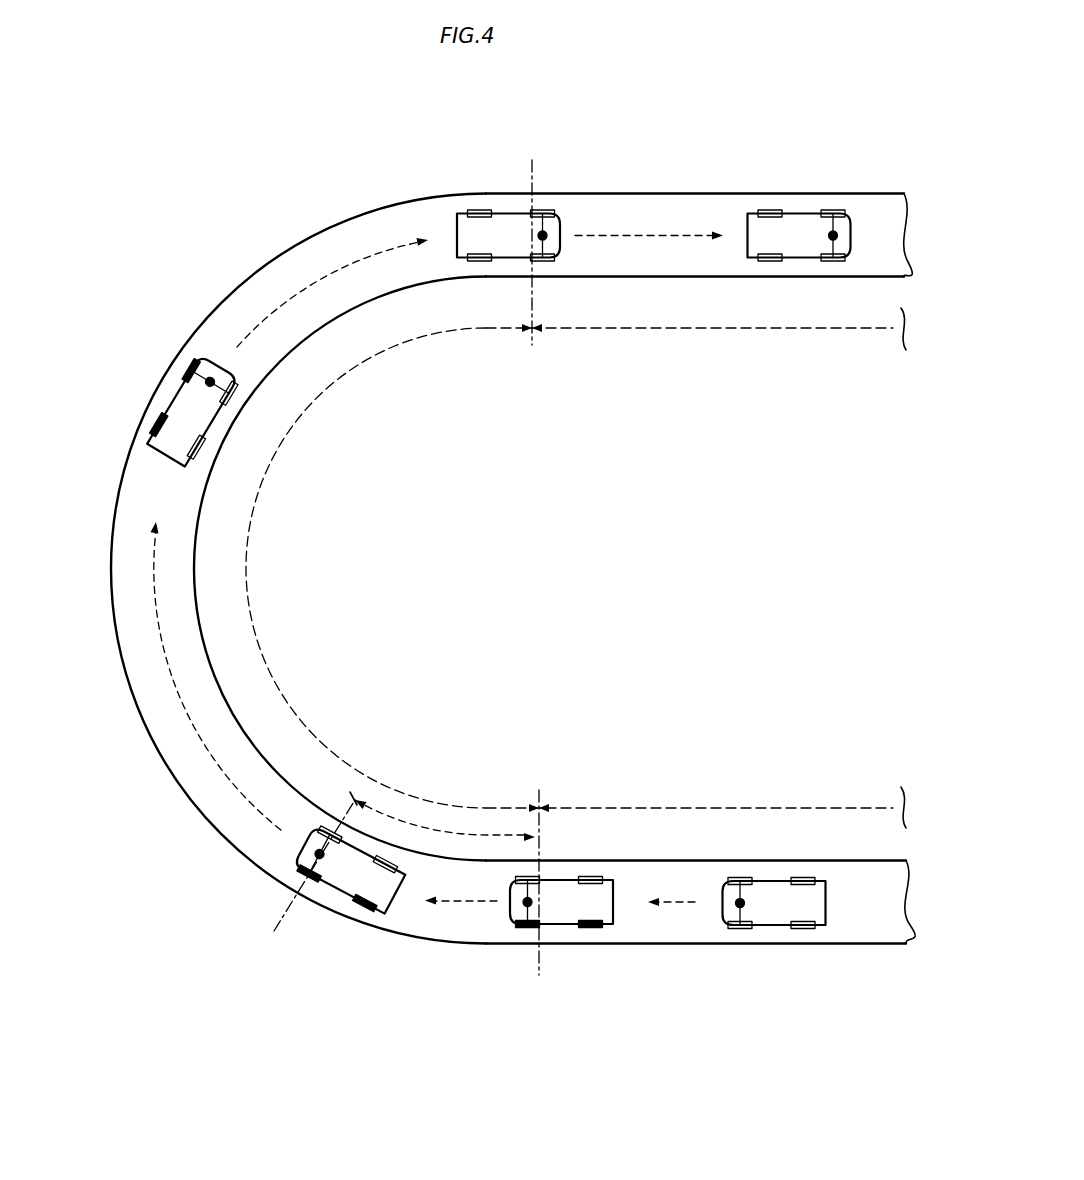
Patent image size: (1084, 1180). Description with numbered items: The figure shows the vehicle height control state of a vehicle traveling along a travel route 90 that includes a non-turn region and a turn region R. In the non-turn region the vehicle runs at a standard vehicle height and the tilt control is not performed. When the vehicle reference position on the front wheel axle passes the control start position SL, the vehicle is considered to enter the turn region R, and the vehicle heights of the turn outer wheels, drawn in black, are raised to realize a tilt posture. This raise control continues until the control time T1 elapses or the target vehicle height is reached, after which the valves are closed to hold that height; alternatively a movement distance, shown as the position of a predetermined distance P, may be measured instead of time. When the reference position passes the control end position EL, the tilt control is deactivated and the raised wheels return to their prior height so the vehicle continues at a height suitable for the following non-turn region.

The travel route 90 is at (650, 858).
The turn region R is at (254, 520).
The position of a predetermined distance P is at (351, 795).
The control end position EL is at (536, 340).
The control start position SL is at (541, 795).
The control time T1 is at (445, 820).